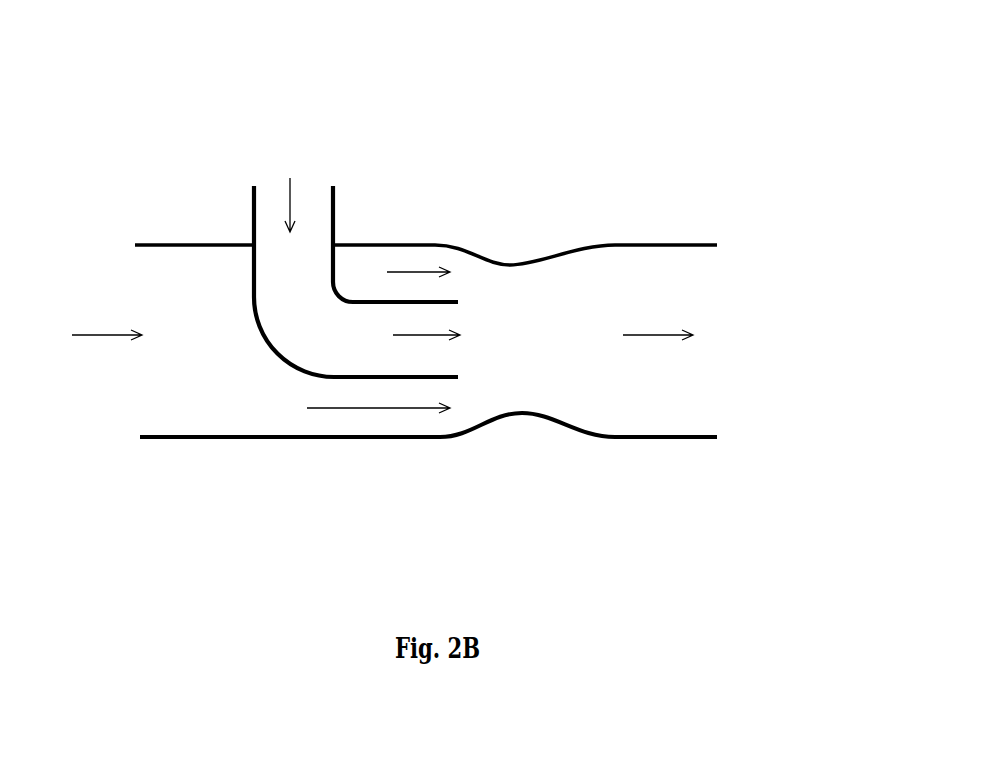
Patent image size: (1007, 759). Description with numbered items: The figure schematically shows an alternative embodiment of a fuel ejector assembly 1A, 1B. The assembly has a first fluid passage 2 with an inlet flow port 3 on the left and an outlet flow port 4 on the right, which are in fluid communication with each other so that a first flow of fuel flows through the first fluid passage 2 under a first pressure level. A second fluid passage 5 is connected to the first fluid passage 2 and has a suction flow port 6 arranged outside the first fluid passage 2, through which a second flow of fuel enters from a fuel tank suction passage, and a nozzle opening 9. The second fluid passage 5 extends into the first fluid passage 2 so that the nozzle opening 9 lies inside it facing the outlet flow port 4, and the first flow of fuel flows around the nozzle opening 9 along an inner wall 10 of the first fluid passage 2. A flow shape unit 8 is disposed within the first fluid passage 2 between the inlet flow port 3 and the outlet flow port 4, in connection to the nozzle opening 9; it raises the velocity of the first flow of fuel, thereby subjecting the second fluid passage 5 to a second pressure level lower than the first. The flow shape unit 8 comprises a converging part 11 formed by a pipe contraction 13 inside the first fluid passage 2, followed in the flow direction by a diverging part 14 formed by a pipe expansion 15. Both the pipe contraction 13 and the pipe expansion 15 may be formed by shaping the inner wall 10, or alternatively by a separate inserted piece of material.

The fuel ejector assembly 1A is at (424, 286).
The fuel ejector assembly 1B is at (171, 96).
The first fluid passage 2 is at (367, 448).
The inlet flow port 3 is at (150, 292).
The outlet flow port 4 is at (693, 285).
The second fluid passage 5 is at (313, 218).
The suction flow port 6 is at (278, 195).
The flow shape unit 8 is at (508, 262).
The nozzle opening 9 is at (518, 448).
The inner wall 10 is at (148, 435).
The converging part 11 is at (458, 478).
The pipe contraction 13 is at (472, 432).
The diverging part 14 is at (582, 478).
The pipe expansion 15 is at (560, 427).